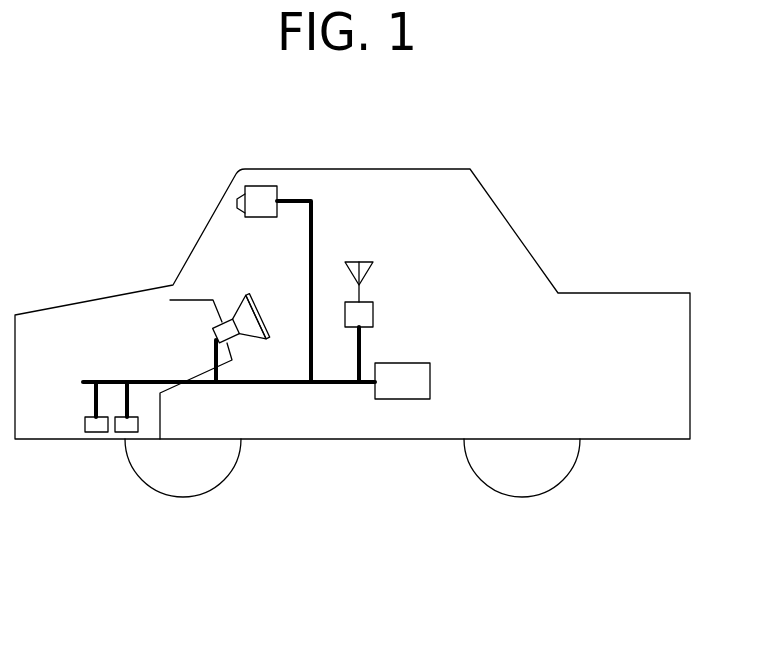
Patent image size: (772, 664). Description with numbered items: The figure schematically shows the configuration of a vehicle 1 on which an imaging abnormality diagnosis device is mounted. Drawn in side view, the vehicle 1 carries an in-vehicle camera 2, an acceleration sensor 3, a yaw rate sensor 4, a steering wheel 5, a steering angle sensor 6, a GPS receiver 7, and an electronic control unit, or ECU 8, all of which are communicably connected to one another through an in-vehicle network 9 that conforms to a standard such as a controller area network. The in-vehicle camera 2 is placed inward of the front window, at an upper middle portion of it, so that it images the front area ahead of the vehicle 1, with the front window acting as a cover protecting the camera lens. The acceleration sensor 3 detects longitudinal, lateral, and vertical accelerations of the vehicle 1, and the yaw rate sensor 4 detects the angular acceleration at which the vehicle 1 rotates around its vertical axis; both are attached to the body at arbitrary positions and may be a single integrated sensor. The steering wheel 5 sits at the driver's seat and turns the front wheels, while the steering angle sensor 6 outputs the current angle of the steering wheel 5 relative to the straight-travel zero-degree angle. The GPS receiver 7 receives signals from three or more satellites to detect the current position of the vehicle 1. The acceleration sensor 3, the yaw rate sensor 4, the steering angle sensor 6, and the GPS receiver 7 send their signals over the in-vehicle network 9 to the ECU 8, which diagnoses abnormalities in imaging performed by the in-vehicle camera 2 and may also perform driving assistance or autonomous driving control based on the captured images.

The vehicle 1 is at (528, 248).
The in-vehicle camera 2 is at (278, 194).
The acceleration sensor 3 is at (96, 432).
The yaw rate sensor 4 is at (121, 432).
The steering wheel 5 is at (252, 297).
The steering angle sensor 6 is at (212, 331).
The GPS receiver 7 is at (373, 308).
The electronic control unit (ECU) 8 is at (430, 371).
The in-vehicle network 9 is at (330, 384).